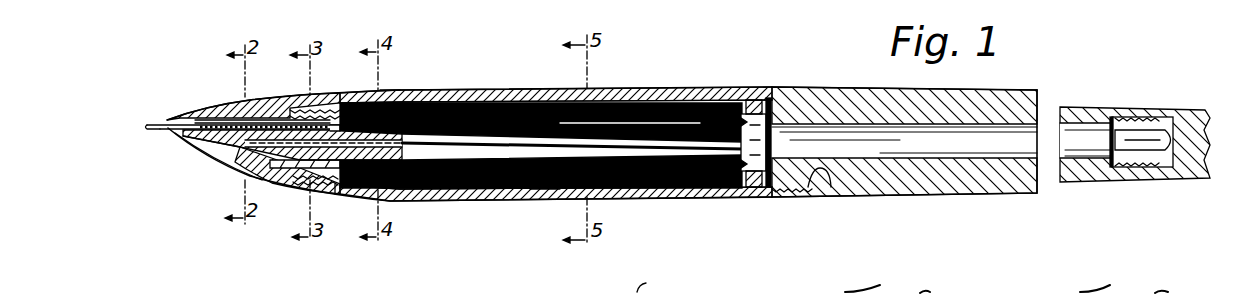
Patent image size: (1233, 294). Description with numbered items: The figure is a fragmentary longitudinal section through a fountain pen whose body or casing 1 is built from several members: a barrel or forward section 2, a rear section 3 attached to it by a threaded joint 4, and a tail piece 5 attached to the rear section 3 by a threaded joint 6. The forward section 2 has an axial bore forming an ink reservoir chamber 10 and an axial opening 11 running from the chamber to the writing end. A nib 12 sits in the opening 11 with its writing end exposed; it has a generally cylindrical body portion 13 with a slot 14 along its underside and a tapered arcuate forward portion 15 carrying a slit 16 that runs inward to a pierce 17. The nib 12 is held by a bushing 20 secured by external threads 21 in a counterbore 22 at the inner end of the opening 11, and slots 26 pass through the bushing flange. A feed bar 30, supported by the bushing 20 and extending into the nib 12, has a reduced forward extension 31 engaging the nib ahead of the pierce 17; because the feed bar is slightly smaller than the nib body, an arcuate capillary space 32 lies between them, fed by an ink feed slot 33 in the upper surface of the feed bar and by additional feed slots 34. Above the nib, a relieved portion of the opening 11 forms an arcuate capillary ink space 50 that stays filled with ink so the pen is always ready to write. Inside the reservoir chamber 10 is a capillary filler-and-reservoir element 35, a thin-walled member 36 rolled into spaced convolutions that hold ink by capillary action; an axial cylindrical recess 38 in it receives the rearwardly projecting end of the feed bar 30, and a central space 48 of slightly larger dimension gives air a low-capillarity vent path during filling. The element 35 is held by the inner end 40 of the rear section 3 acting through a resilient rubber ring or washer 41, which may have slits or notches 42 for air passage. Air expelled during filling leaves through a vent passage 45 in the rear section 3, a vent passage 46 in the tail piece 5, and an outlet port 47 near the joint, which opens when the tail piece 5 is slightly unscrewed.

The body or casing 1 is at (667, 202).
The barrel or forward section 2 is at (510, 194).
The rear section 3 is at (900, 198).
The threaded joint 4 is at (787, 194).
The tail piece 5 is at (1182, 178).
The threaded joint 6 is at (1137, 167).
The ink reservoir chamber 10 is at (467, 193).
The axial opening 11 is at (233, 163).
The nib 12 is at (263, 110).
The cylindrical body portion 13 is at (240, 172).
The slot 14 is at (283, 177).
The tapered arcuate forward portion 15 is at (238, 147).
The slit 16 is at (170, 127).
The pierce 17 is at (200, 123).
The bushing 20 is at (330, 122).
The external threads 21 is at (290, 170).
The counterbore 22 is at (297, 110).
The slots 26 is at (337, 190).
The feed bar 30 is at (380, 88).
The reduced forward extension 31 is at (200, 138).
The arcuate capillary space 32 is at (233, 120).
The ink feed slot 33 is at (407, 87).
The additional feed slots 34 is at (443, 93).
The capillary filler-and-reservoir element 35 is at (548, 193).
The thin-walled member 36 is at (658, 282).
The axial cylindrical recess 38 is at (412, 190).
The inner end of rear body member 40 is at (818, 182).
The rubber ring or washer 41 is at (760, 97).
The slits or notches 42 is at (745, 118).
The vent passage 45 is at (987, 153).
The vent passage 46 is at (1150, 152).
The outlet port 47 is at (1160, 120).
The central space 48 is at (633, 123).
The arcuate capillary ink space 50 is at (222, 118).